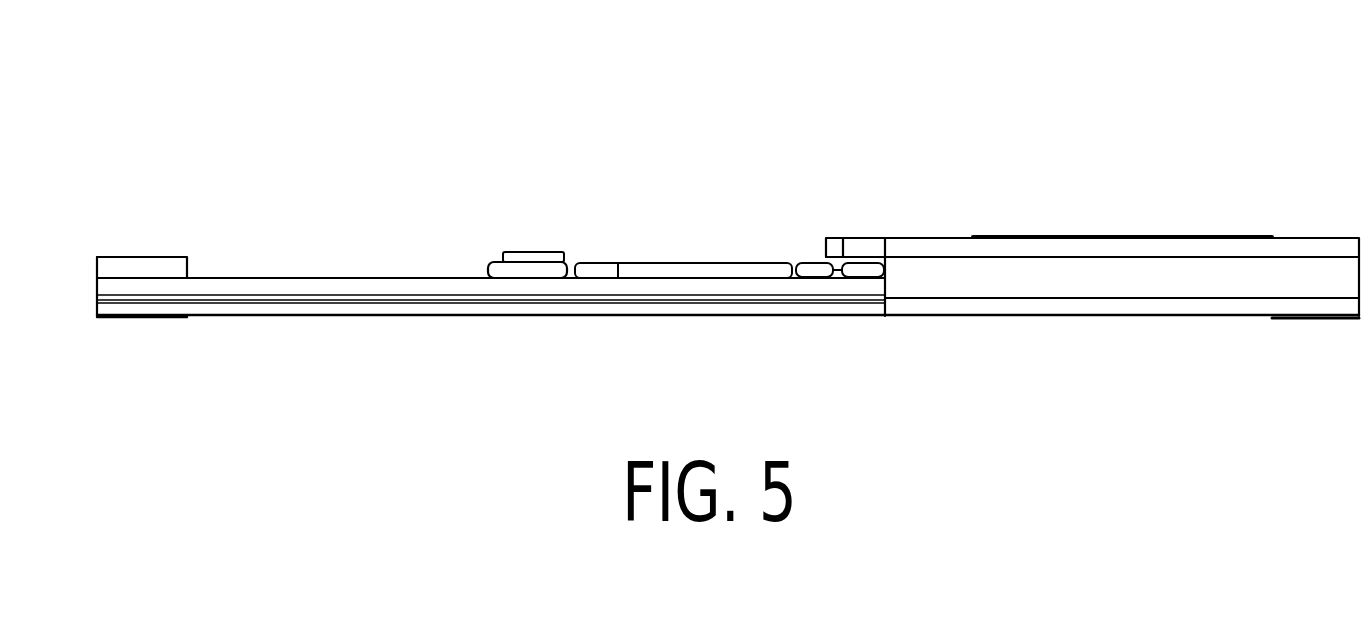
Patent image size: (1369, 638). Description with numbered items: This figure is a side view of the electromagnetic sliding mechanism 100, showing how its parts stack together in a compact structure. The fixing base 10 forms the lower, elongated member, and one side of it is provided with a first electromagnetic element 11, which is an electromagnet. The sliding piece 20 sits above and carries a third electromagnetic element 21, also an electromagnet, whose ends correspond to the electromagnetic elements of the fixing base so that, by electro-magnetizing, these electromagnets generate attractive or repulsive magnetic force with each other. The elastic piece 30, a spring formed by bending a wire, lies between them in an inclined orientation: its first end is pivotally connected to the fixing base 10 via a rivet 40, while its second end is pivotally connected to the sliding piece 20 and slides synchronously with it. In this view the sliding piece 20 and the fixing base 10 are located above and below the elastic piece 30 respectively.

The electromagnetic sliding mechanism 100 is at (193, 70).
The fixing base 10 is at (260, 316).
The first electromagnetic element 11 is at (113, 259).
The sliding piece 20 is at (1299, 238).
The third electromagnetic element 21 is at (1018, 235).
The elastic piece 30 is at (688, 262).
The rivet 40 is at (527, 252).